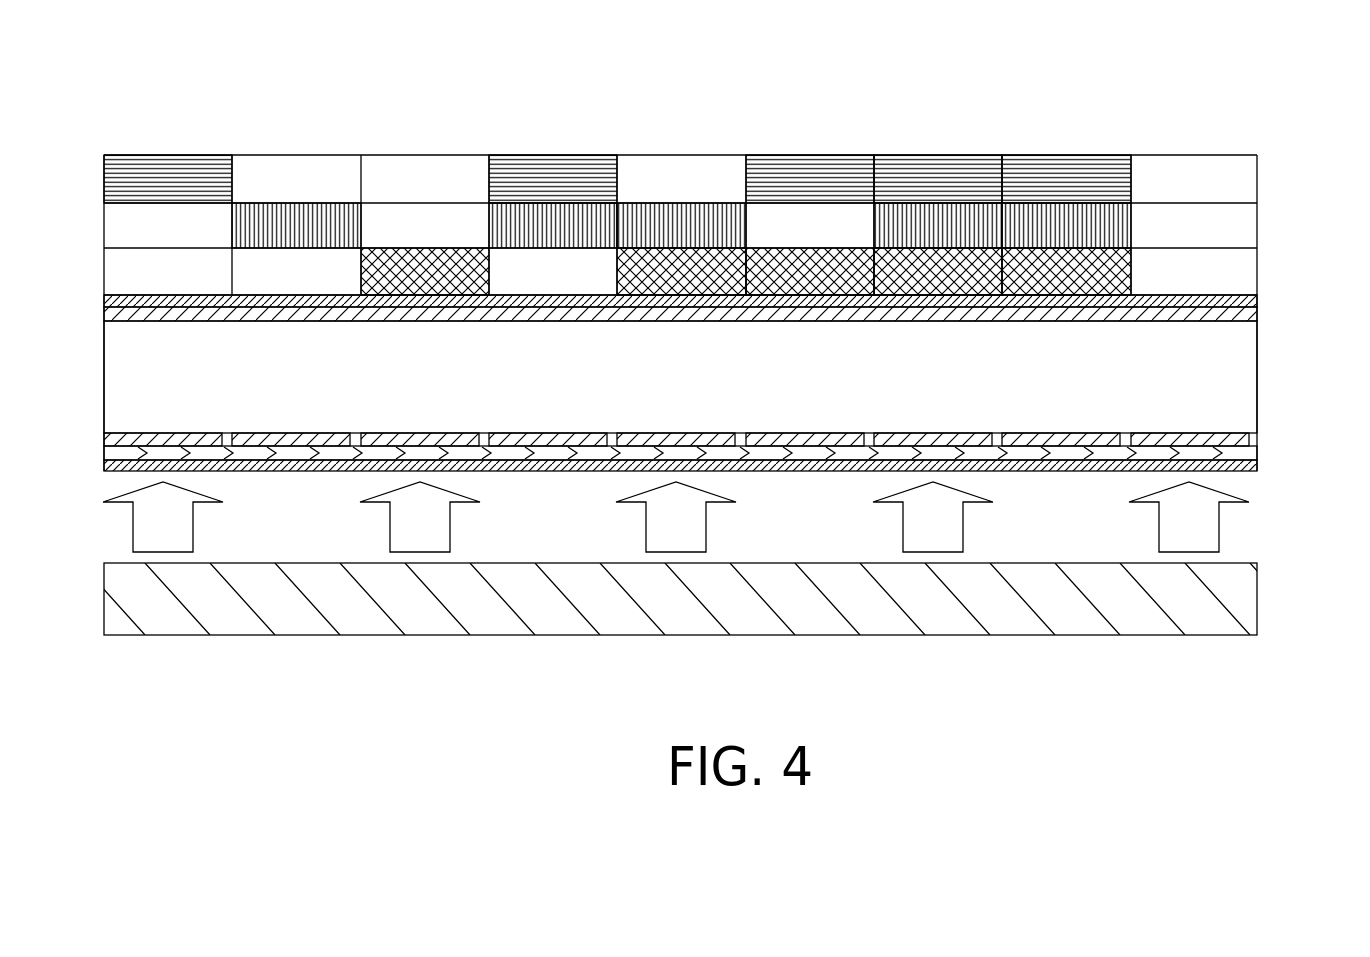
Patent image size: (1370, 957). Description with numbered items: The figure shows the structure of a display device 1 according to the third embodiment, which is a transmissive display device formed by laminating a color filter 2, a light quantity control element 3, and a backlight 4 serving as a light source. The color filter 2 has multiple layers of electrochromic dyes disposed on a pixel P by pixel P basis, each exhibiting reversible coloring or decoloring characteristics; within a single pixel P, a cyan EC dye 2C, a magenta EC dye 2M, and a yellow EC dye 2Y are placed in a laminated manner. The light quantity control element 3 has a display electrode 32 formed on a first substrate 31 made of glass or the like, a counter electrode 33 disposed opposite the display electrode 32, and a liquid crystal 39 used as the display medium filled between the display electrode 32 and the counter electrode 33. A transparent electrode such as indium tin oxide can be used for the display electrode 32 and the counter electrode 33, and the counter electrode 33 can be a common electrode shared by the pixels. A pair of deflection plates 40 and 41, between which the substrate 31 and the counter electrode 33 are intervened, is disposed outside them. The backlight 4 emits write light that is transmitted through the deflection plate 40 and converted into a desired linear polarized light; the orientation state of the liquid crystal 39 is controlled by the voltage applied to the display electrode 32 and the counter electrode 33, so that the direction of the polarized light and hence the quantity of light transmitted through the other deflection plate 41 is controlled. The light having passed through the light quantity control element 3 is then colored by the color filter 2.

The display device 1 is at (1307, 70).
The pixel P is at (232, 115).
The color filter 2 is at (1333, 160).
The cyan EC dye 2C is at (1242, 183).
The magenta EC dye 2M is at (1242, 230).
The yellow EC dye 2Y is at (1242, 277).
The light quantity control element 3 is at (1331, 486).
The deflection plate 41 is at (1257, 300).
The counter electrode 33 is at (1257, 316).
The liquid crystal 39 is at (1248, 375).
The display electrode 32 is at (1255, 440).
The first substrate 31 is at (1255, 451).
The deflection plate 40 is at (1257, 463).
The backlight 4 is at (1257, 597).